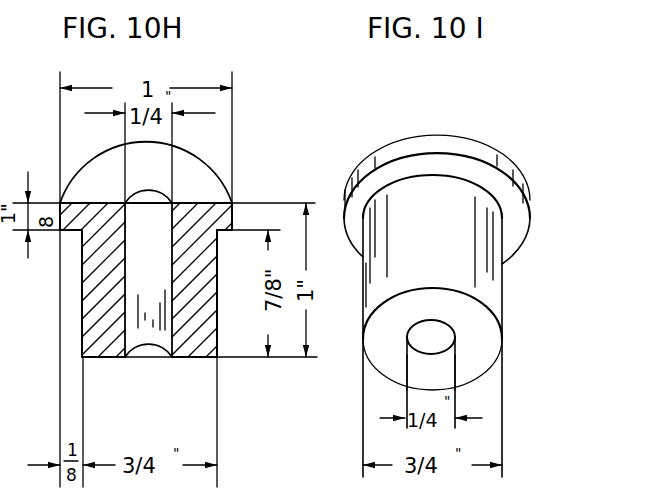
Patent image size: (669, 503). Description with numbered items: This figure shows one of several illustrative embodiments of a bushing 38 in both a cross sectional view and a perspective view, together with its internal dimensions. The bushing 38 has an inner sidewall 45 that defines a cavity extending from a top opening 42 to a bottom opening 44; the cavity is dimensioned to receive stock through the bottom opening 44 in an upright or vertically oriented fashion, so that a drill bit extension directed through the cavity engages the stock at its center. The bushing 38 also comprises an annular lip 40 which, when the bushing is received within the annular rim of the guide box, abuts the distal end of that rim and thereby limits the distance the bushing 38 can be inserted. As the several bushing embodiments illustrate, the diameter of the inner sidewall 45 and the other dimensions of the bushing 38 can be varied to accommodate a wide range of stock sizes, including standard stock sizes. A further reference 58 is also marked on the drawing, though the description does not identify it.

In FIG. 10I, the bushing 38 is at (453, 252).
In FIG. 10H, the annular lip 40 is at (224, 233).
In FIG. 10I, the annular lip 40 is at (518, 228).
In FIG. 10H, the top opening 42 is at (148, 345).
In FIG. 10I, the top opening 42 is at (455, 329).
In FIG. 10H, the bottom opening 44 is at (140, 186).
In FIG. 10H, the inner sidewall 45 is at (165, 280).
In FIG. 10I, the inner sidewall 45 is at (445, 353).
In FIG. 10I, the bore passage 58 is at (450, 382).